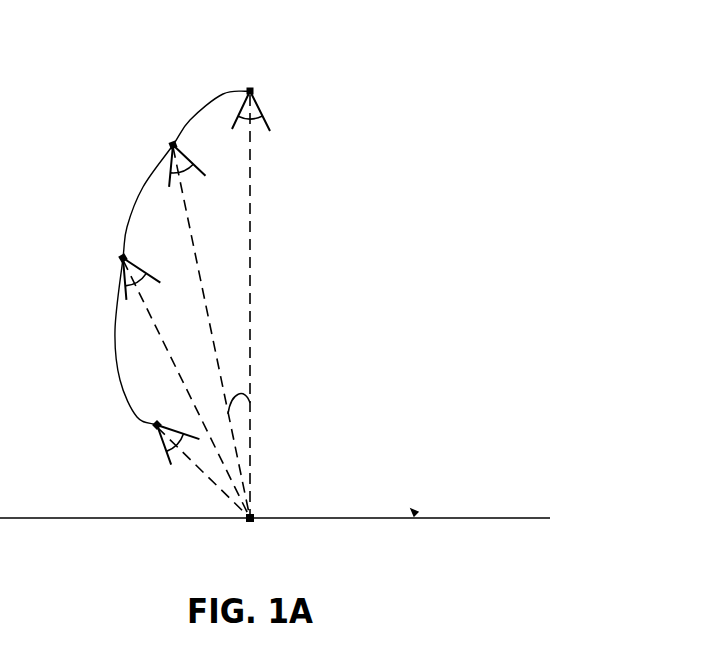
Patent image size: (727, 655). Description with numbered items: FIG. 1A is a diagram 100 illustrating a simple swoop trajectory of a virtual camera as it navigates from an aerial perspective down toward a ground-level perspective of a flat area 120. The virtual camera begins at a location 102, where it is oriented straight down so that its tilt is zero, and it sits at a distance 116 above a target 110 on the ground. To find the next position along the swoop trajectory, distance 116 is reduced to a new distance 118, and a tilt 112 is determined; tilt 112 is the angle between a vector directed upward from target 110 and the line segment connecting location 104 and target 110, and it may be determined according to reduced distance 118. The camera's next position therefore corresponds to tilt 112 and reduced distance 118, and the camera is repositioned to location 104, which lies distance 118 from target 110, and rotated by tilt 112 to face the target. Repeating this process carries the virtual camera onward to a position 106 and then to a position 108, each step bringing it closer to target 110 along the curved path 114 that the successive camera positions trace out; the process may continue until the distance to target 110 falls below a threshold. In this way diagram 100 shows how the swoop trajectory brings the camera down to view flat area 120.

The diagram 100 is at (682, 35).
The location 102 is at (254, 92).
The location 104 is at (171, 146).
The position 106 is at (121, 258).
The position 108 is at (155, 428).
The target 110 is at (255, 516).
The tilt 112 is at (248, 392).
The sensor arc trajectory 114 is at (182, 258).
The distance 116 is at (250, 270).
The distance 118 is at (215, 338).
The flat area 120 is at (414, 515).